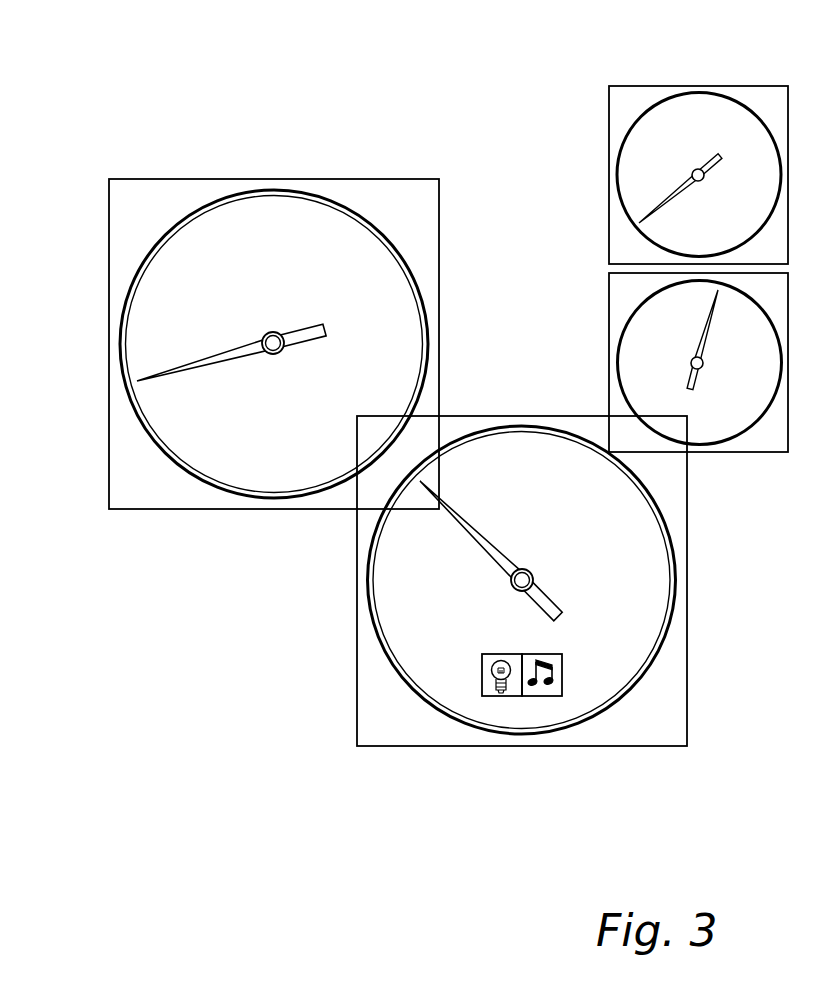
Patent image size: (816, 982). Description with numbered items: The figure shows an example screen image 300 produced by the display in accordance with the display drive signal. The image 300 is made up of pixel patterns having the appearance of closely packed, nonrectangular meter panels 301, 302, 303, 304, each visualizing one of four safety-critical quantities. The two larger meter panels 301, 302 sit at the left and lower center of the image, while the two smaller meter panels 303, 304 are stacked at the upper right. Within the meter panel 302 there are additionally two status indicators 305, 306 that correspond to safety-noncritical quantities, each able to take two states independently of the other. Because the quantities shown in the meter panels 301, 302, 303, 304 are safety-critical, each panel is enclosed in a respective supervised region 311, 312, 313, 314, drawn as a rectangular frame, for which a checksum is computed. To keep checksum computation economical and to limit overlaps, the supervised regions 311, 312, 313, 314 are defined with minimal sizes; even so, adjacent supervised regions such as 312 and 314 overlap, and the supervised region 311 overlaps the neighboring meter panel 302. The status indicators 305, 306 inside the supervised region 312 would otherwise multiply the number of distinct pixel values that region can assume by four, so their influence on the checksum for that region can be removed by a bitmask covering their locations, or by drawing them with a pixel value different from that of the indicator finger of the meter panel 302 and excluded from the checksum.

The screen image 300 is at (210, 38).
The meter panel 301 is at (153, 447).
The meter panel 302 is at (413, 689).
The meter panel 303 is at (624, 140).
The meter panel 304 is at (628, 320).
The status indicator 305 is at (507, 696).
The status indicator 306 is at (542, 696).
The supervised region 311 is at (172, 510).
The supervised region 312 is at (450, 746).
The supervised region 313 is at (609, 205).
The supervised region 314 is at (736, 454).